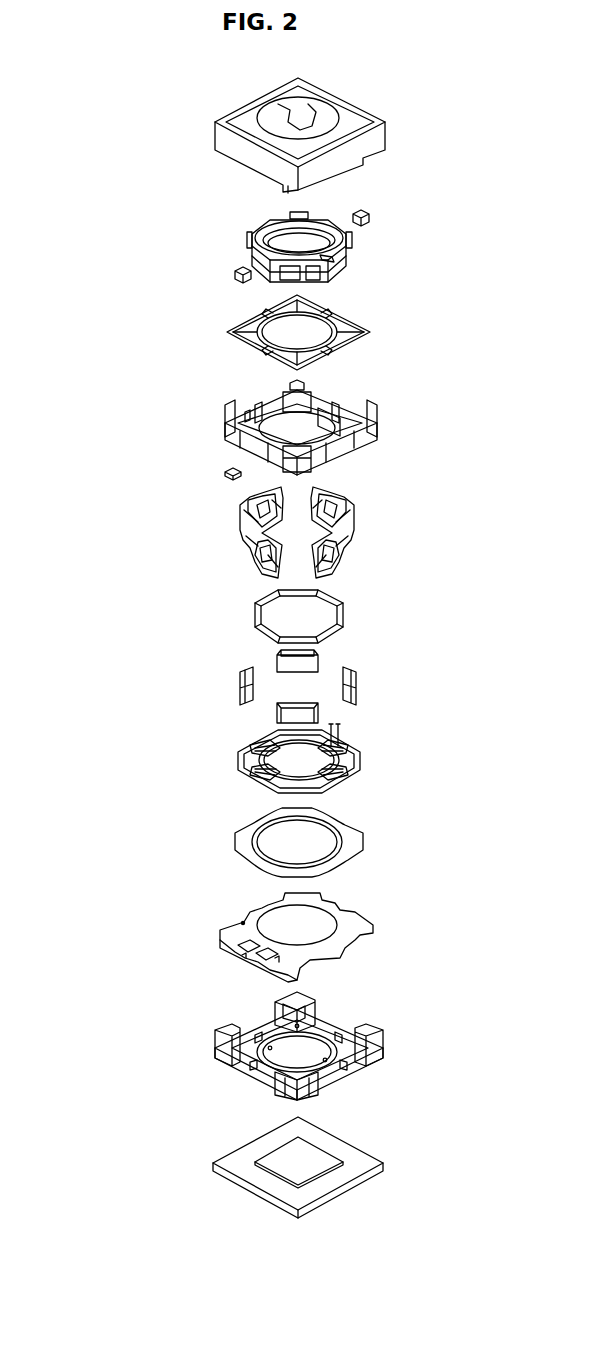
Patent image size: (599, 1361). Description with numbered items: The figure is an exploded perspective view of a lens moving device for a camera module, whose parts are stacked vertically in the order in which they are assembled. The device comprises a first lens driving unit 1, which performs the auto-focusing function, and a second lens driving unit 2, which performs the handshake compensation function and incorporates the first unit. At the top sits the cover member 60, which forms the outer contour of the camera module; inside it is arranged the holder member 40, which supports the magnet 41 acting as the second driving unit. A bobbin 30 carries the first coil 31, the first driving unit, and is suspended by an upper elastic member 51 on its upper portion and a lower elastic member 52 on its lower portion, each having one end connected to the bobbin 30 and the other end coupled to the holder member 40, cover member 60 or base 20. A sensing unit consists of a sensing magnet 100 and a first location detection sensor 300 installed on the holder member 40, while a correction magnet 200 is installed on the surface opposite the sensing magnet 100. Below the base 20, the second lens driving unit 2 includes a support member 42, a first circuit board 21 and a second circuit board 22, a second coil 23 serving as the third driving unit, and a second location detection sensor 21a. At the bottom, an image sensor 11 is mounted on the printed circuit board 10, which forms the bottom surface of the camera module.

The first lens driving unit 1 is at (148, 229).
The second lens driving unit 2 is at (80, 1140).
The printed circuit board 10 is at (338, 1156).
The image sensor 11 is at (320, 1158).
The base 20 is at (383, 1044).
The first circuit board 21 is at (289, 937).
The second location detection sensor 21a is at (242, 923).
The second circuit board 22 is at (325, 844).
The second coil 23 is at (348, 838).
The bobbin 30 is at (345, 262).
The first coil 31 is at (343, 617).
The holder member 40 is at (375, 421).
The magnet 41 is at (357, 684).
The support member 42 is at (355, 507).
The upper elastic member 51 is at (362, 326).
The lower elastic member 52 is at (360, 760).
The cover member 60 is at (380, 143).
The sensing magnet 100 is at (234, 274).
The correction magnet 200 is at (370, 216).
The first location detection sensor 300 is at (224, 471).